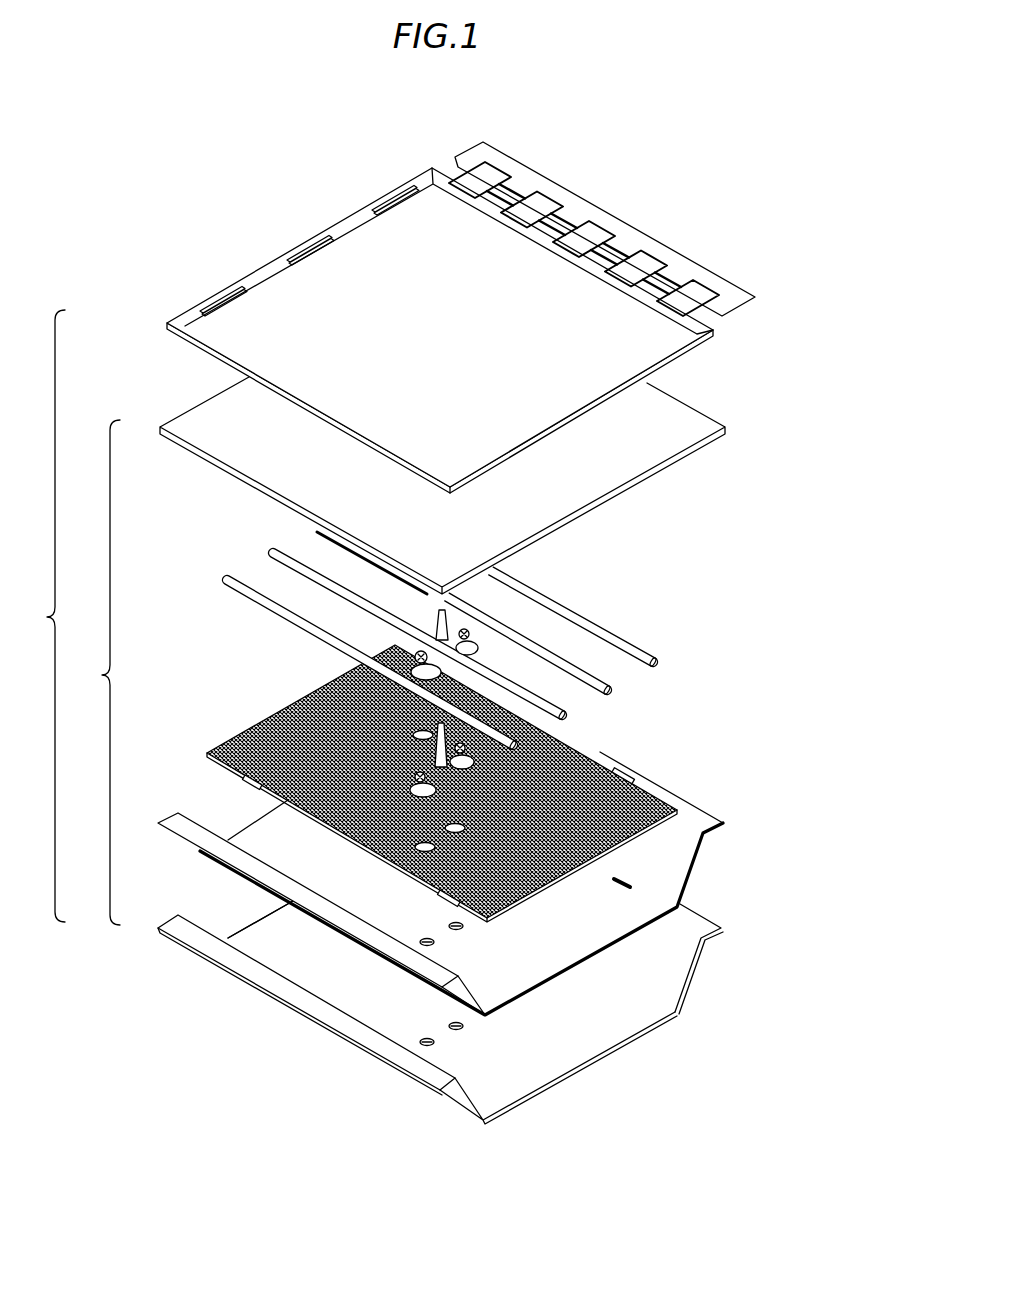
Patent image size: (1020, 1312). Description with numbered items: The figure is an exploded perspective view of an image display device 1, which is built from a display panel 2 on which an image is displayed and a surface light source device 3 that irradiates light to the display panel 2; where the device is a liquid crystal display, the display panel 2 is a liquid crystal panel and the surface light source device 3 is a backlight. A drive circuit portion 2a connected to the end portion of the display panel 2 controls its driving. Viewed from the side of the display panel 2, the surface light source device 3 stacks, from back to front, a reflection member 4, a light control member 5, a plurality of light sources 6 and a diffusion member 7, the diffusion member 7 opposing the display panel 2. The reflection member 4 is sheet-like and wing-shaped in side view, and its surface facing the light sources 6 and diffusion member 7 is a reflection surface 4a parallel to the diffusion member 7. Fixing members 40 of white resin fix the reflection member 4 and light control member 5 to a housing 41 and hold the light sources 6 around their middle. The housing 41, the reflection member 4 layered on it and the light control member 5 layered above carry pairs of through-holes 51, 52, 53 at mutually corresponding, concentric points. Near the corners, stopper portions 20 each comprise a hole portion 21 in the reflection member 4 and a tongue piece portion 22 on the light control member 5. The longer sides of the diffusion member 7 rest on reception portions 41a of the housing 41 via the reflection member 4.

The image display device 1 is at (16, 633).
The display panel 2 is at (461, 317).
The drive circuit portion 2a is at (632, 241).
The surface light source device 3 is at (72, 693).
The reflection member 4 is at (456, 1025).
The reflection surface 4a is at (535, 948).
The light control member 5 is at (443, 898).
The light sources 6 is at (612, 694).
The diffusion member 7 is at (637, 484).
The stopper portions 20 is at (493, 790).
The hole portion 21 is at (632, 879).
The tongue piece portion 22 is at (245, 782).
The fixing members 40 is at (480, 653).
The housing 41 is at (537, 1091).
The reception portions 41a is at (705, 920).
The through-holes 51 is at (434, 1043).
The through-holes 52 is at (434, 943).
The through-holes 53 is at (440, 823).